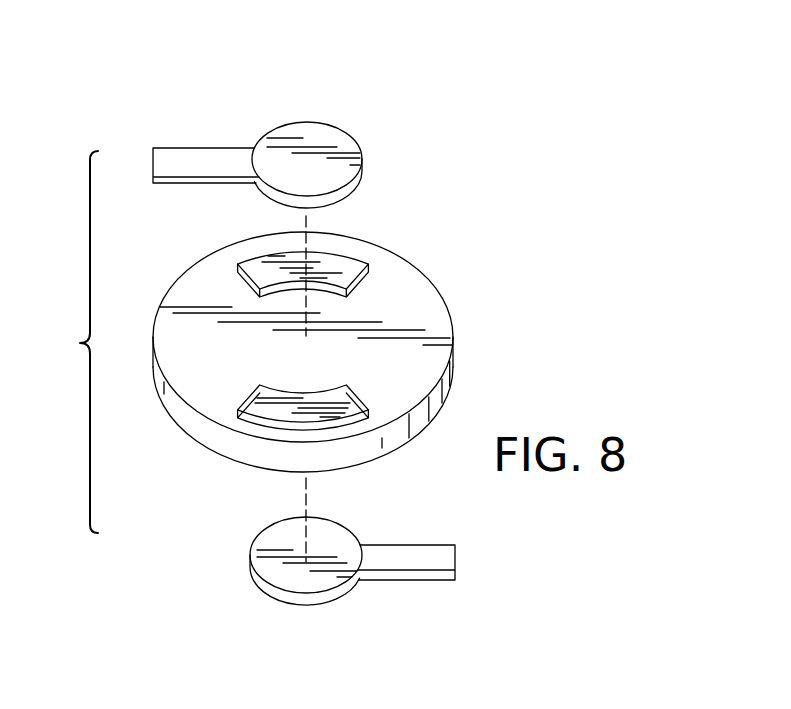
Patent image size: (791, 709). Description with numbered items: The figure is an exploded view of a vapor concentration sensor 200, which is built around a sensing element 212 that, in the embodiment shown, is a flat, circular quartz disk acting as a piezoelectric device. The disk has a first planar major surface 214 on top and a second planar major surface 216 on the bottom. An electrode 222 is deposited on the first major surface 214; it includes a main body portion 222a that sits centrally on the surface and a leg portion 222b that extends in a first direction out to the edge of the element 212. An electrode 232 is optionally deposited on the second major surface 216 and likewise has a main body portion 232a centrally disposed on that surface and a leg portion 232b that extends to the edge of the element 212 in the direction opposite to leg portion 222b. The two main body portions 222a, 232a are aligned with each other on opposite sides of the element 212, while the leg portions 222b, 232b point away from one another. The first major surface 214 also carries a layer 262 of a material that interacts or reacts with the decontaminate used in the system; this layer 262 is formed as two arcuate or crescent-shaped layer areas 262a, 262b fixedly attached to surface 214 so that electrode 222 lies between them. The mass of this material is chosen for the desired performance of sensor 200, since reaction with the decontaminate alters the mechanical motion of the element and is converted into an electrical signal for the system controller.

The vapor concentration sensor 200 is at (485, 235).
The sensing element 212 is at (444, 294).
The first planar major surface 214 is at (423, 373).
The second planar major surface 216 is at (377, 458).
The electrode 222 is at (295, 126).
The main body portion 222a is at (302, 132).
The leg portion 222b is at (197, 158).
The electrode 232 is at (336, 598).
The main body portion 232a is at (310, 582).
The leg portion 232b is at (415, 560).
The layer 262 is at (286, 342).
The arcuate layer area 262a is at (243, 263).
The arcuate layer area 262b is at (267, 405).